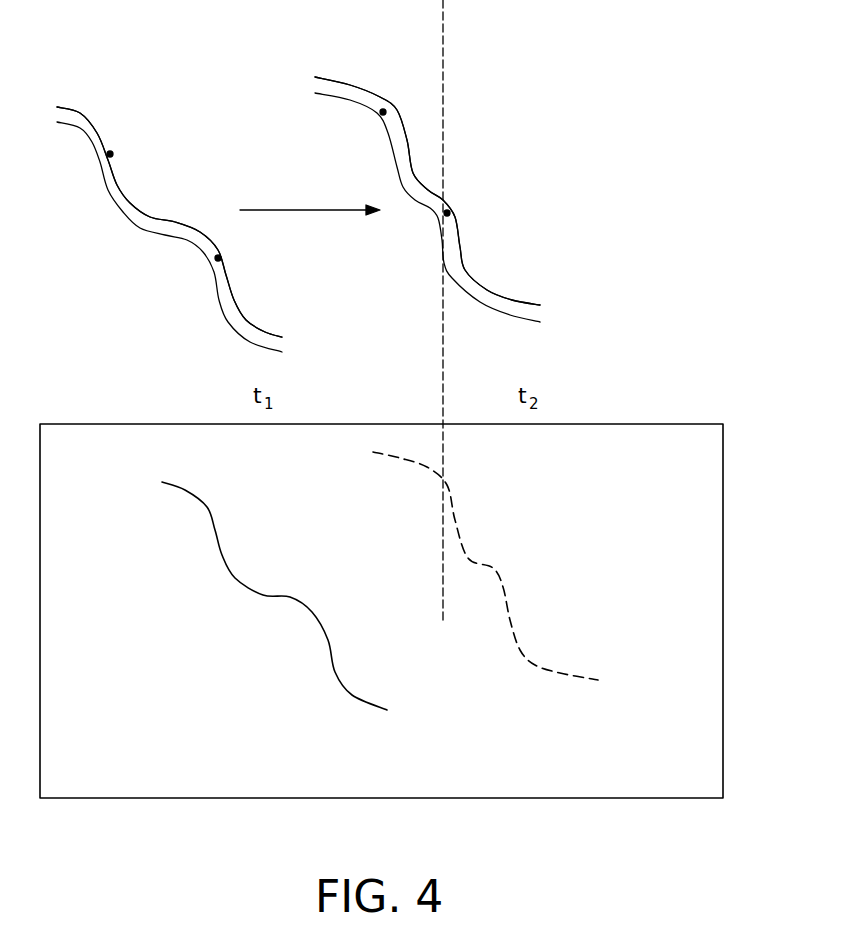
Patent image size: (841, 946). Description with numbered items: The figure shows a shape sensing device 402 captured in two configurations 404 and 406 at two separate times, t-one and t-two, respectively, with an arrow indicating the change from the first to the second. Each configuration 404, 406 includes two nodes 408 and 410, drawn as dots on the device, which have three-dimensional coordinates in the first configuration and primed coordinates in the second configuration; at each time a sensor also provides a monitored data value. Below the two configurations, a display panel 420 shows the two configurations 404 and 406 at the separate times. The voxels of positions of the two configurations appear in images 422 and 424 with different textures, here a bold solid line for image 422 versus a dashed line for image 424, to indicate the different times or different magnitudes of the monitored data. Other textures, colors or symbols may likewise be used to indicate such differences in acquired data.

The shape sensing device 402 is at (73, 107).
The first configuration 404 is at (211, 330).
The second configuration 406 is at (421, 267).
The first node 408 is at (112, 154).
The second node 410 is at (221, 258).
The display panel 420 is at (120, 799).
The first image 422 is at (310, 663).
The second image 424 is at (498, 664).